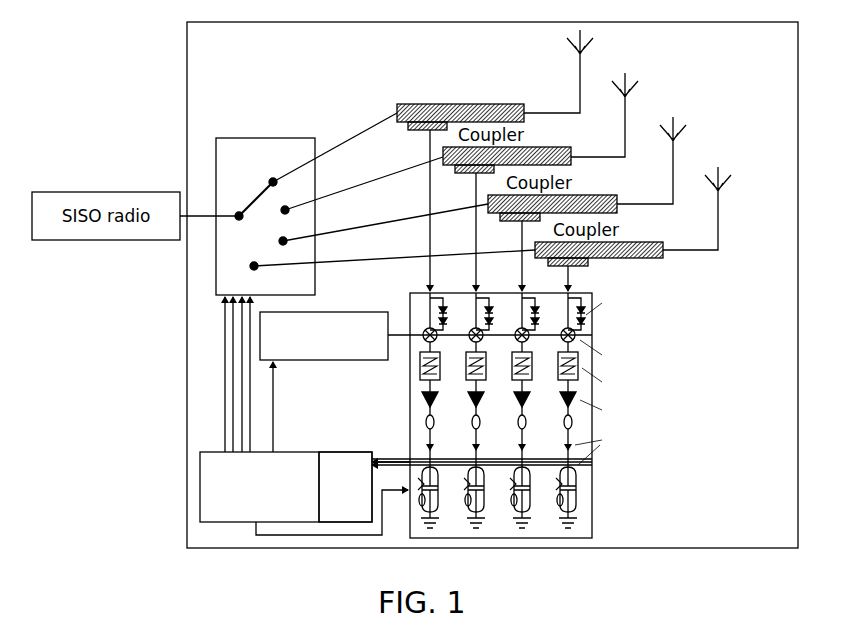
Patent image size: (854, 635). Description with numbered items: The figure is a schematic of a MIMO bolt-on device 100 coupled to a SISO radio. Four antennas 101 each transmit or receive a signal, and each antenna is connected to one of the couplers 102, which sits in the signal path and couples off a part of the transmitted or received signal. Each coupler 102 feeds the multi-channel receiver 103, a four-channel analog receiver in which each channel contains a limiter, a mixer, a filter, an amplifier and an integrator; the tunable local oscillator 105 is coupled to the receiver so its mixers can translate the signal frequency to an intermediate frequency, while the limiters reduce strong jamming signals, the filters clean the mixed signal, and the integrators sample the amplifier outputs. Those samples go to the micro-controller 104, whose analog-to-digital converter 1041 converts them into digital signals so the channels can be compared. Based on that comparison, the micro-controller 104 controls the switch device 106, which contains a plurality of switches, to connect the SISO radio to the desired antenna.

The MIMO bolt-on device 100 is at (741, 494).
The antennas 101 is at (720, 222).
The couplers 102 is at (497, 104).
The multi-channel receiver 103 is at (410, 302).
The micro-controller 104 is at (203, 450).
The tunable local oscillator 105 is at (301, 362).
The switch device 106 is at (262, 138).
The analog-to-digital converter 1041 is at (343, 456).